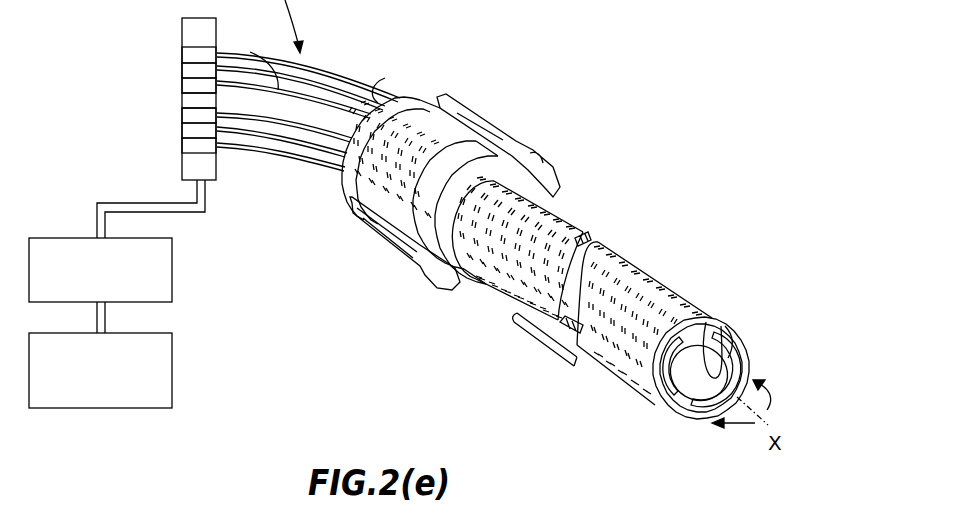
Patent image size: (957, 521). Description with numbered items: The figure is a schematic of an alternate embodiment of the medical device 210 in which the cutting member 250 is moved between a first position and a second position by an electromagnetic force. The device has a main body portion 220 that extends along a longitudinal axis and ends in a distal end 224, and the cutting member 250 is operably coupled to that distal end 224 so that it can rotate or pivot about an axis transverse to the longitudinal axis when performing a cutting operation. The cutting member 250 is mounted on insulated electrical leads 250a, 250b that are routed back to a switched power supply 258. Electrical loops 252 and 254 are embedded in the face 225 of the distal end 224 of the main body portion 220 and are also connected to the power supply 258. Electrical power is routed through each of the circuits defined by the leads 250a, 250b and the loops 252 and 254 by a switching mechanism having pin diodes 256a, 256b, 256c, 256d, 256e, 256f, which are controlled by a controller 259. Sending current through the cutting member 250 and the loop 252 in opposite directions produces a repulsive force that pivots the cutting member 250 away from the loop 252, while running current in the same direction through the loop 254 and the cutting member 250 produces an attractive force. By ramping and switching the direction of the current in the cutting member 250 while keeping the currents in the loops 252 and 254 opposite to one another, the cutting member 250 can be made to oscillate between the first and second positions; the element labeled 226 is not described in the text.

The medical device 210 is at (627, 150).
The main body portion 220 is at (538, 347).
The distal end 224 is at (693, 432).
The face 225 is at (747, 355).
The lumen 226 is at (685, 383).
The cutting member 250 is at (723, 327).
The insulated electrical lead 250a is at (243, 117).
The insulated electrical lead 250b is at (323, 80).
The electrical loop 252 is at (441, 241).
The electrical loop 254 is at (258, 49).
The pin diode 256a is at (182, 53).
The pin diode 256b is at (182, 70).
The pin diode 256c is at (182, 88).
The pin diode 256d is at (182, 117).
The pin diode 256e is at (182, 128).
The pin diode 256f is at (182, 147).
The switched power supply 258 is at (173, 372).
The controller 259 is at (173, 271).